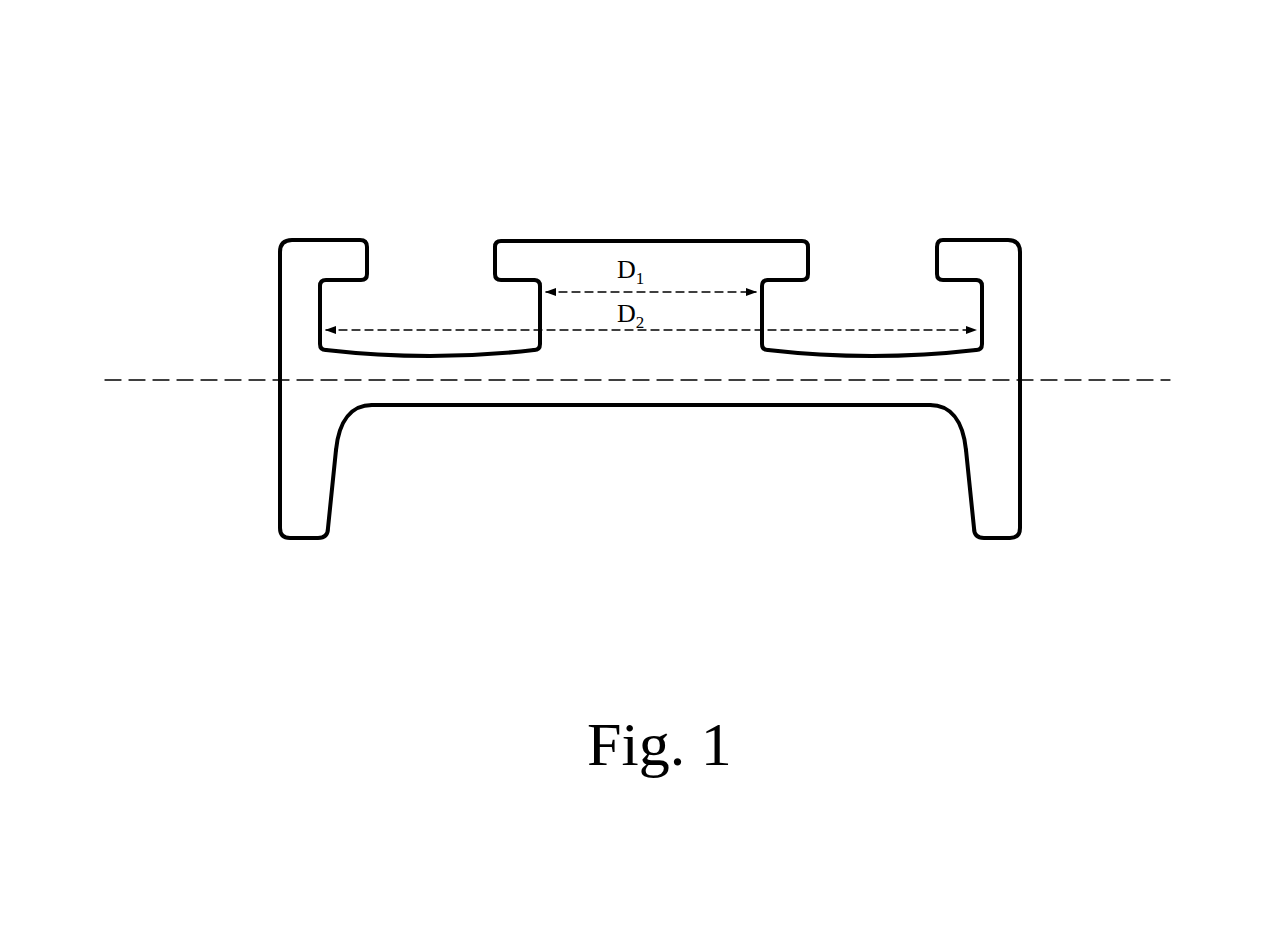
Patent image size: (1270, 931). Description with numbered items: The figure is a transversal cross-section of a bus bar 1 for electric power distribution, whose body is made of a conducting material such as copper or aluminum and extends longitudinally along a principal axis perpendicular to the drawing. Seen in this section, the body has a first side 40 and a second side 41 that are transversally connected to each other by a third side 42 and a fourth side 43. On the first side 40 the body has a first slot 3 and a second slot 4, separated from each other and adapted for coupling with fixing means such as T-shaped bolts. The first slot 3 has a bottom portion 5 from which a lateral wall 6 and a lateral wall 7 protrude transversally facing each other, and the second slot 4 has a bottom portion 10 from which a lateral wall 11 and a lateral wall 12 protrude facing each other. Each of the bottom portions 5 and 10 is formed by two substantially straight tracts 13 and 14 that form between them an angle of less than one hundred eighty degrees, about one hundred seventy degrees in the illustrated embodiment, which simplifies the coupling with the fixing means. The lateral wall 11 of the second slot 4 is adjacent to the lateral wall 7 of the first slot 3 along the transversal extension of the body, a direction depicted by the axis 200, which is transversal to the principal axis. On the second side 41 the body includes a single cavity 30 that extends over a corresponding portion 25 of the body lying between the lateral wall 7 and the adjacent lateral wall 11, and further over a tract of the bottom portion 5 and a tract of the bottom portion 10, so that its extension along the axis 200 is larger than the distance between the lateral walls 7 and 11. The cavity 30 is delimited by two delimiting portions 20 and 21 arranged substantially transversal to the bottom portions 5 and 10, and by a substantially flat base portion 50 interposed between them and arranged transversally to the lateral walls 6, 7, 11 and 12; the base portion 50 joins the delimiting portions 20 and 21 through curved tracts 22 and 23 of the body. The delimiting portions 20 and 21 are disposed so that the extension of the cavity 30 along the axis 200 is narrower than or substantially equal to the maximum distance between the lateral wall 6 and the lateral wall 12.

The bus bar 1 is at (1002, 141).
The first slot 3 is at (437, 310).
The second slot 4 is at (880, 310).
The bottom portion 5 is at (432, 357).
The lateral wall 6 is at (326, 313).
The lateral wall 7 is at (536, 313).
The bottom portion 10 is at (877, 360).
The lateral wall 11 is at (766, 316).
The lateral wall 12 is at (978, 316).
The straight tract 13 is at (358, 346).
The straight tract 14 is at (491, 346).
The delimiting portion 20 is at (318, 490).
The delimiting portion 21 is at (992, 472).
The curved tract 22 is at (342, 421).
The curved tract 23 is at (958, 416).
The portion of the body 25 is at (684, 311).
The cavity 30 is at (632, 440).
The first side 40 is at (625, 238).
The second side 41 is at (304, 556).
The third side 42 is at (272, 280).
The fourth side 43 is at (1028, 288).
The base portion 50 is at (713, 408).
The axis 200 is at (1101, 378).